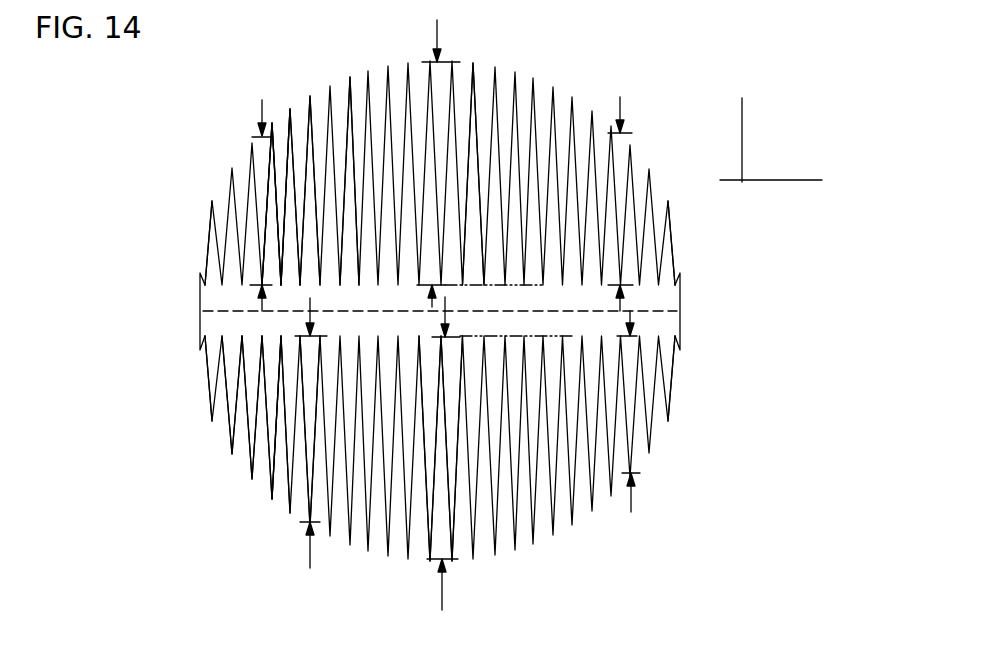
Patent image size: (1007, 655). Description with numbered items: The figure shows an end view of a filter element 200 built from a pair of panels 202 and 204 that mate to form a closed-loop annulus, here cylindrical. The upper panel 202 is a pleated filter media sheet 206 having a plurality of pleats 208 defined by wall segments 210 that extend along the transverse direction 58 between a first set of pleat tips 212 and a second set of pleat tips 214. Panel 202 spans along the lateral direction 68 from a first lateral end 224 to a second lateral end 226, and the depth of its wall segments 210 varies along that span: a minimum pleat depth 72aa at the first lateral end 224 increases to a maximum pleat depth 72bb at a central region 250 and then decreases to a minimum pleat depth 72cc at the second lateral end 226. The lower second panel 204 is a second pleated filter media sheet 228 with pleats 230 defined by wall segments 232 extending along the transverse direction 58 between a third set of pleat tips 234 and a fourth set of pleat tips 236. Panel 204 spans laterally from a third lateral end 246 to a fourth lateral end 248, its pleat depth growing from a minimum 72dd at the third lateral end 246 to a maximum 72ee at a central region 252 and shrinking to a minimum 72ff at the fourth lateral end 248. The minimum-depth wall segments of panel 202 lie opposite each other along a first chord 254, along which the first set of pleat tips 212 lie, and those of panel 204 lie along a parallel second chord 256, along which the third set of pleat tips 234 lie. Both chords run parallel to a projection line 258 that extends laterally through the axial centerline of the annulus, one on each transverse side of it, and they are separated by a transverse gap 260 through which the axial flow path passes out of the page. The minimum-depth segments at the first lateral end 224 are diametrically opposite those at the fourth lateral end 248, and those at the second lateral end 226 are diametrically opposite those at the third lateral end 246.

The filter element 200 is at (150, 134).
The panel 202 is at (216, 178).
The second panel 204 is at (194, 423).
The pleated filter media sheet 206 is at (273, 140).
The pleats 208 is at (292, 118).
The wall segments 210 is at (300, 130).
The first set of pleat tips 212 is at (280, 287).
The second set of pleat tips 214 is at (348, 77).
The first lateral end 224 is at (206, 223).
The second lateral end 226 is at (672, 253).
The second pleated filter media sheet 228 is at (228, 436).
The pleats 230 is at (250, 450).
The wall segments 232 is at (268, 470).
The third set of pleat tips 234 is at (280, 337).
The fourth set of pleat tips 236 is at (303, 500).
The third lateral end 246 is at (207, 373).
The fourth lateral end 248 is at (672, 362).
The central region 250 is at (468, 66).
The central region 252 is at (417, 558).
The first chord 254 is at (510, 286).
The second chord 256 is at (478, 335).
The projection line 258 is at (683, 315).
The transverse gap 260 is at (380, 308).
The pleat depth 72aa is at (262, 106).
The pleat depth 72bb is at (437, 28).
The pleat depth 72cc is at (620, 100).
The pleat depth 72dd is at (310, 558).
The pleat depth 72ee is at (442, 590).
The pleat depth 72ff is at (631, 500).
The transverse direction 58 is at (745, 108).
The lateral direction 68 is at (792, 180).